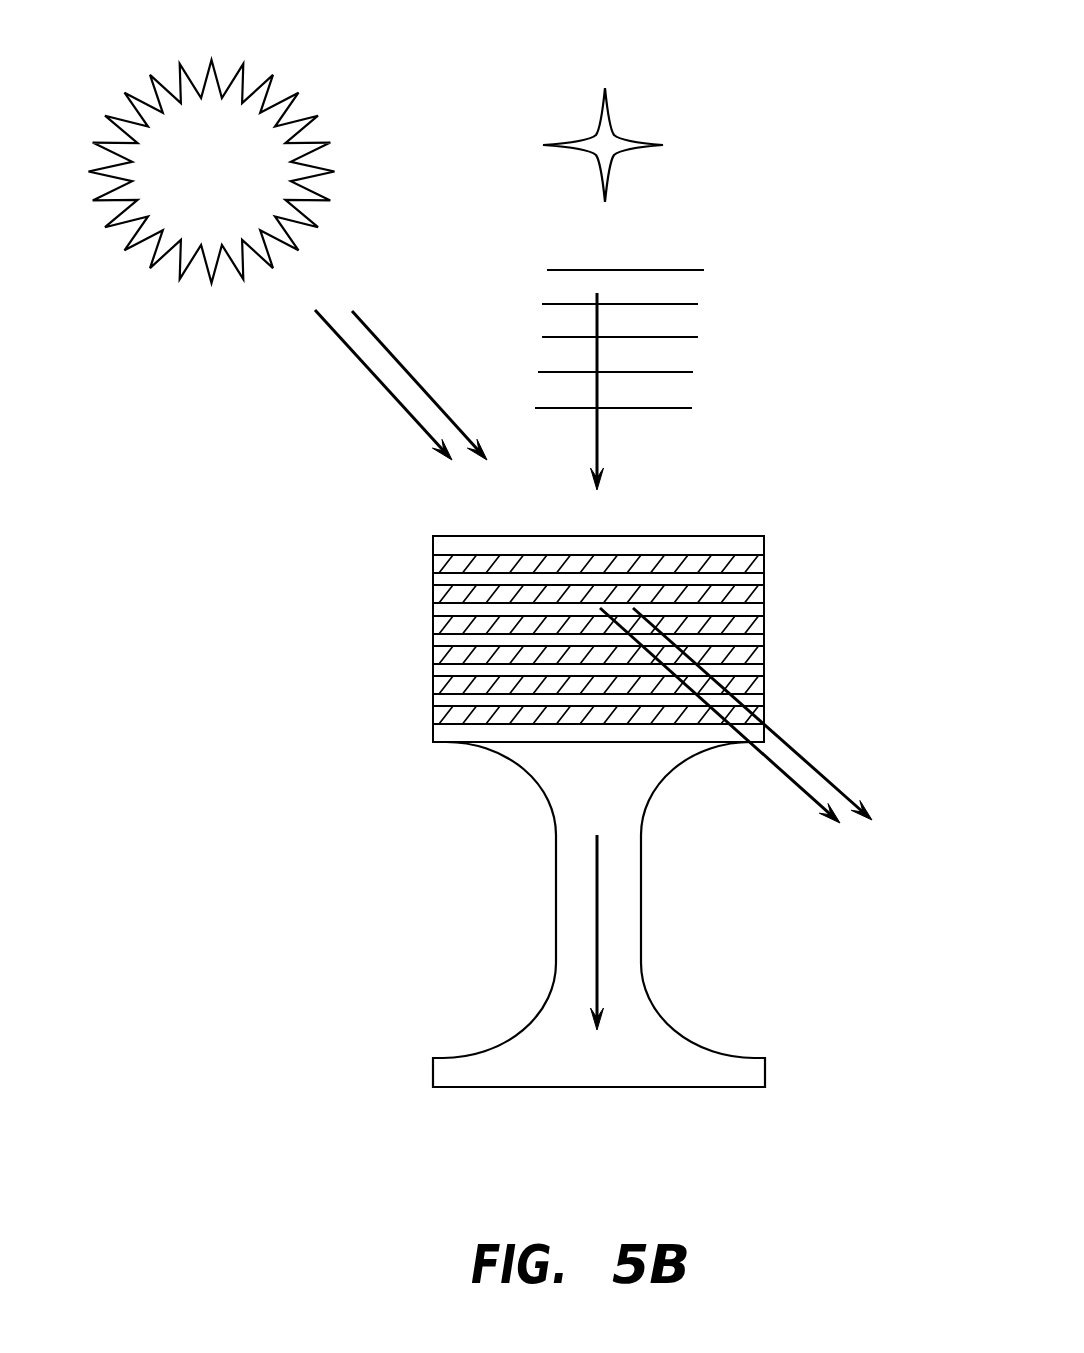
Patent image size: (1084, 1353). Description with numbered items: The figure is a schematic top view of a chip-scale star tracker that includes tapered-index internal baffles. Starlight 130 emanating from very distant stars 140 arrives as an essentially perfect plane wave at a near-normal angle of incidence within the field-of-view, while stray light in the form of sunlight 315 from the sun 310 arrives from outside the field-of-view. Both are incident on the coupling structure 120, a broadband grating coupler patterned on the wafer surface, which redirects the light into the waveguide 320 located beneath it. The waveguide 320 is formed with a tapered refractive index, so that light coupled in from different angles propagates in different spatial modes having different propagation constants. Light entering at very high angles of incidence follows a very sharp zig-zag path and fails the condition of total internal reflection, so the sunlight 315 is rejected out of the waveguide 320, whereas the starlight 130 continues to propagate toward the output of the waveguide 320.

The sun 310 is at (245, 77).
The stars 140 is at (596, 135).
The starlight 130 is at (653, 365).
The sunlight 315 is at (383, 383).
The coupling structure 120 is at (778, 553).
The waveguide 320 is at (497, 753).